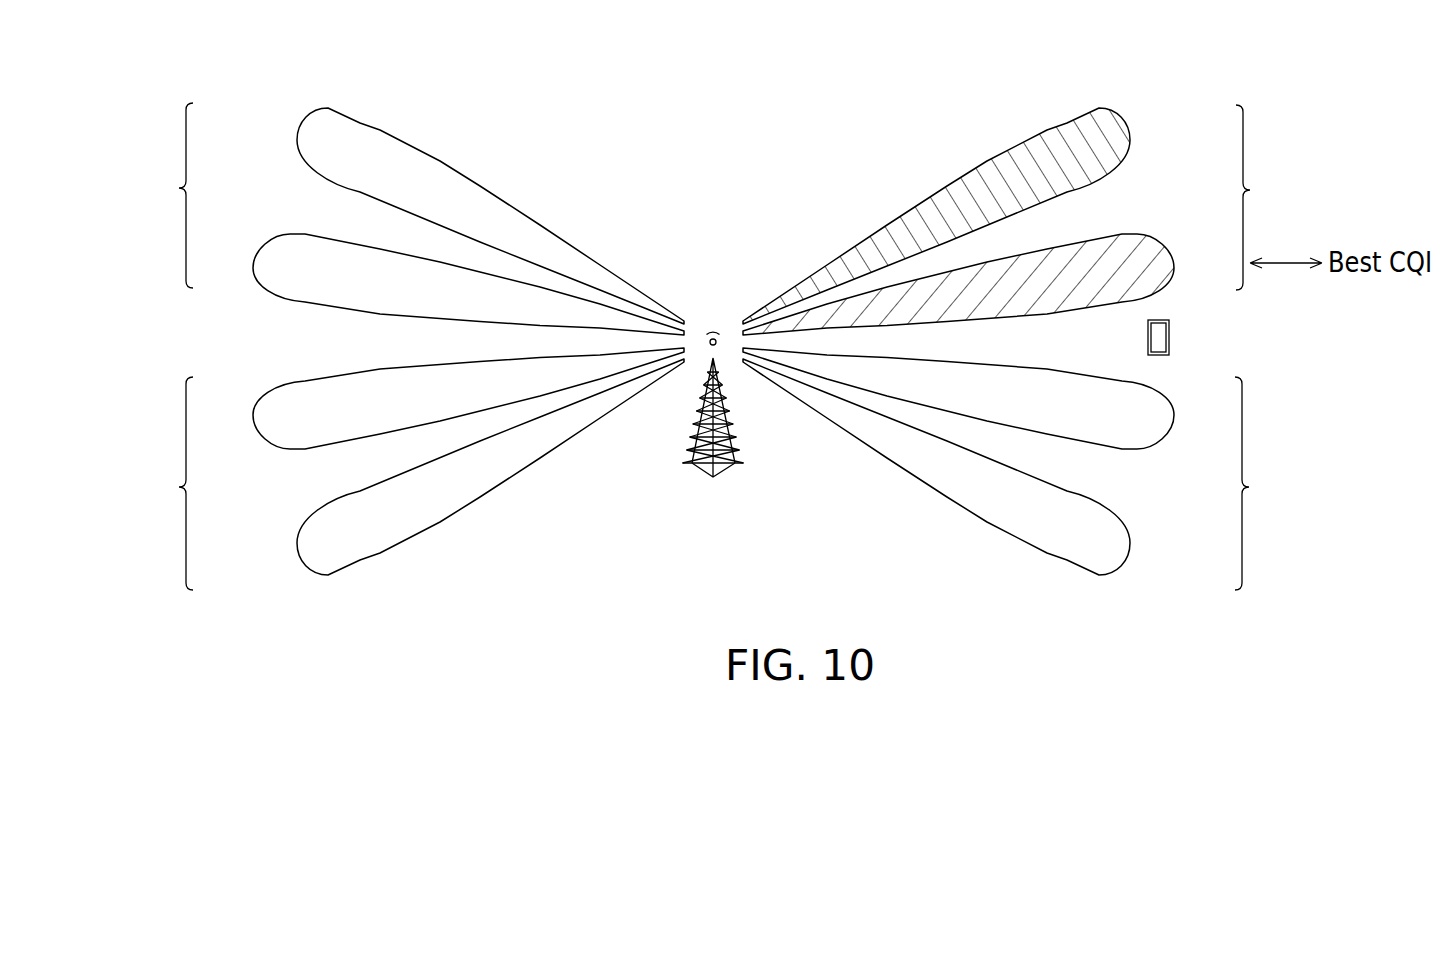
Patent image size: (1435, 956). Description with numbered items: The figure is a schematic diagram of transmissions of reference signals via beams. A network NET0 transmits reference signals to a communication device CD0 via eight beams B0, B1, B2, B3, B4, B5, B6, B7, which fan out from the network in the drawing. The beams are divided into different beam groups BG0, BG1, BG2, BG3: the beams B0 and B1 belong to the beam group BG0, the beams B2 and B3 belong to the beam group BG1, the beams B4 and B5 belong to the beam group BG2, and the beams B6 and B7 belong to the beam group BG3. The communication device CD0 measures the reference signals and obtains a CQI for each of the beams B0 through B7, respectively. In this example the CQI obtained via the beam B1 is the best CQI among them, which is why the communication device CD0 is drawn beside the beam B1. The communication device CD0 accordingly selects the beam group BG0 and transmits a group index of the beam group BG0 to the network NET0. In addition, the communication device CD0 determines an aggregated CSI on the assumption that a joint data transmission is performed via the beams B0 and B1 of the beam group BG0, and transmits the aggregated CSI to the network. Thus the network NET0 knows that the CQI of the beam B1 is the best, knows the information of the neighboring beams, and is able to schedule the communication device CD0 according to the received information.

The beam B0 is at (1134, 132).
The beam B1 is at (1170, 265).
The beam B2 is at (1175, 415).
The beam B3 is at (1128, 548).
The beam B4 is at (304, 548).
The beam B5 is at (258, 418).
The beam B6 is at (256, 267).
The beam B7 is at (300, 139).
The beam group BG0 is at (1273, 197).
The beam group BG1 is at (1271, 483).
The beam group BG2 is at (155, 483).
The beam group BG3 is at (155, 195).
The communication device CD0 is at (1170, 334).
The network NET0 is at (713, 478).